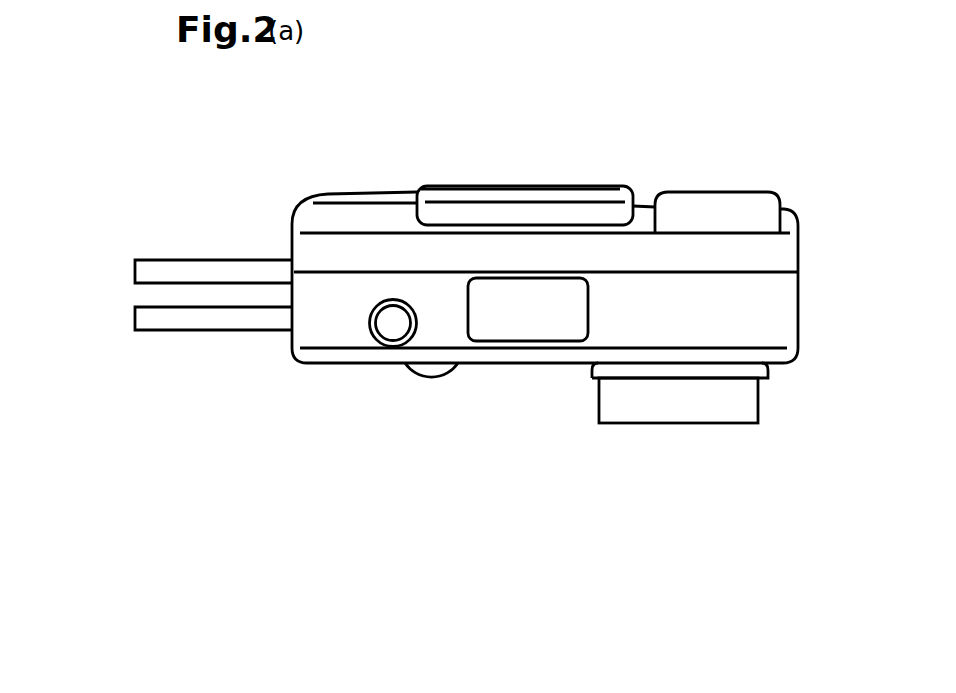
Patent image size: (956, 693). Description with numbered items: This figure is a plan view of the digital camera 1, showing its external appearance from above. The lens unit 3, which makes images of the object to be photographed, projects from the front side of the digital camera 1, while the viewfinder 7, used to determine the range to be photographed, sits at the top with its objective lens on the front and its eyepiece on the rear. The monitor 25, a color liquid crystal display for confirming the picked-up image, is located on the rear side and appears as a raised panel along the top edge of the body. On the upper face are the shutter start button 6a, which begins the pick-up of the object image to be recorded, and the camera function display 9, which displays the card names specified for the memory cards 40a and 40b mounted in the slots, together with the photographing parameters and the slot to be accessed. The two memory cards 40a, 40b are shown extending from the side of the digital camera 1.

The digital camera 1 is at (824, 41).
The lens unit 3 is at (684, 426).
The shutter start button 6a is at (389, 323).
The viewfinder 7 is at (716, 189).
The camera function display 9 is at (528, 323).
The monitor 25 is at (532, 184).
The memory card 40a is at (152, 317).
The memory card 40b is at (152, 272).